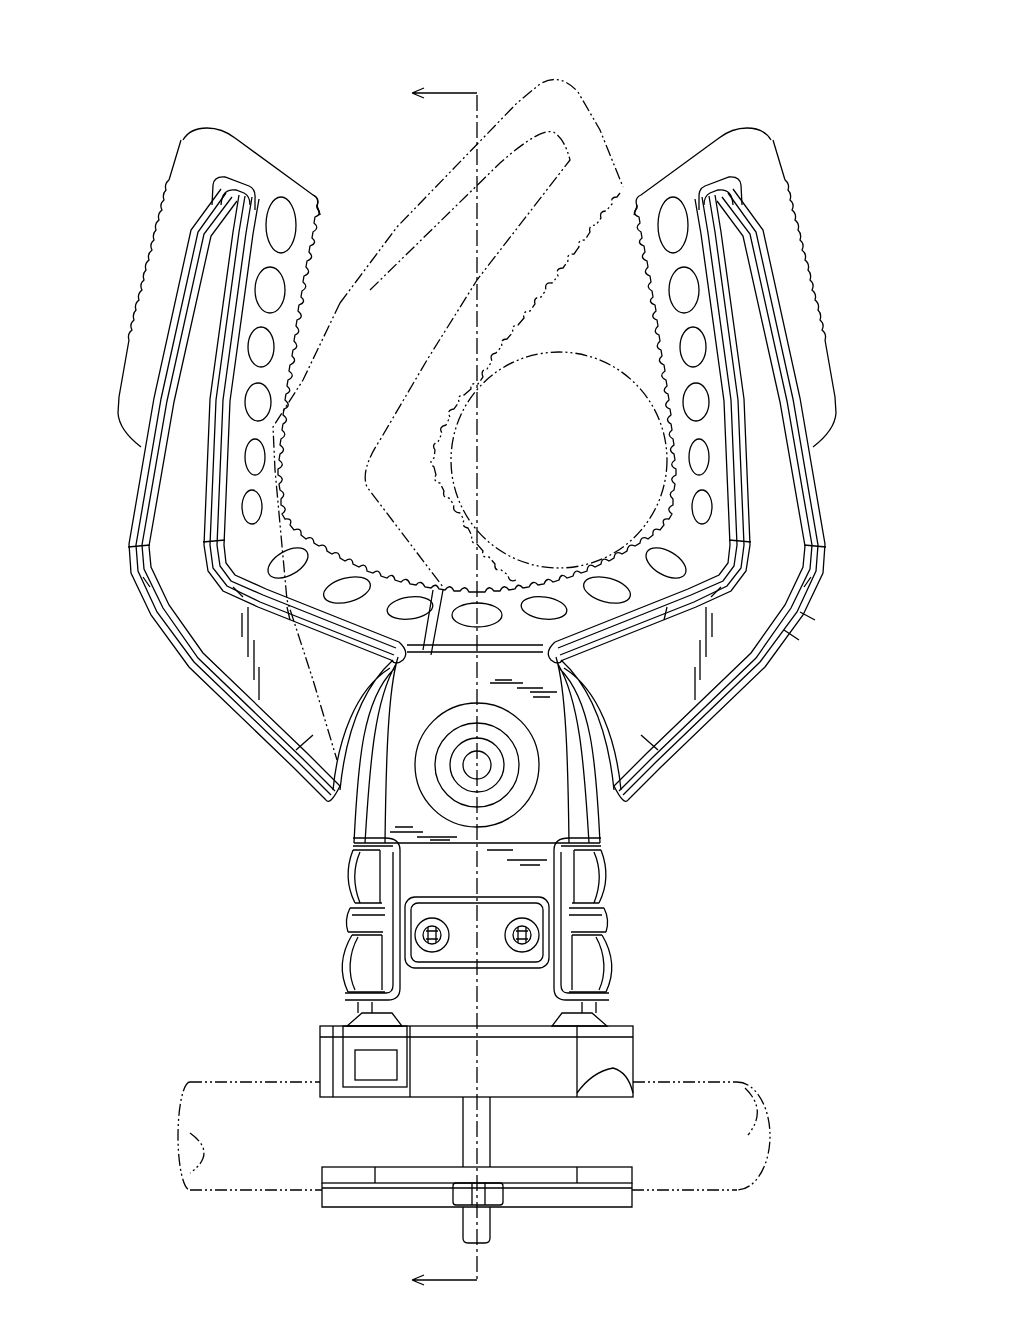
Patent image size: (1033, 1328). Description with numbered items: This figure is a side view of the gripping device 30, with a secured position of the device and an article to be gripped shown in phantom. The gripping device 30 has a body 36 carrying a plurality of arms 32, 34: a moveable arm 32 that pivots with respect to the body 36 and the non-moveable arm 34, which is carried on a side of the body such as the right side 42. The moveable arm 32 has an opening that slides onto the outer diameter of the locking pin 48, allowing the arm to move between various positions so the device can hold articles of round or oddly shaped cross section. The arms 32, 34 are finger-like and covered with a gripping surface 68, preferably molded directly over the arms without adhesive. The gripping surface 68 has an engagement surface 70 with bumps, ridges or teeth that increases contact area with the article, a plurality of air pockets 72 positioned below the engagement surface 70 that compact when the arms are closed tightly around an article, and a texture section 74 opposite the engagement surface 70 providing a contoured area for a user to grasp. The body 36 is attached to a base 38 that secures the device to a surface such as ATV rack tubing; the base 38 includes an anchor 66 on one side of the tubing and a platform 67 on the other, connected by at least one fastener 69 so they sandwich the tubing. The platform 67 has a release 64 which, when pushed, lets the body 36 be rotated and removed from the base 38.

The gripping device 30 is at (160, 80).
The moveable arm 32 is at (150, 513).
The non-moveable arm 34 is at (820, 535).
The body 36 is at (612, 926).
The base 38 is at (637, 1048).
The right side 42 is at (793, 613).
The locking pin 48 is at (520, 782).
The release 64 is at (345, 1017).
The anchor 66 is at (624, 1203).
The platform 67 is at (337, 1060).
The gripping surface 68 is at (180, 140).
The fastener 69 is at (492, 1230).
The engagement surface 70 is at (318, 210).
The air pocket 72 is at (670, 215).
The texture section 74 is at (795, 250).